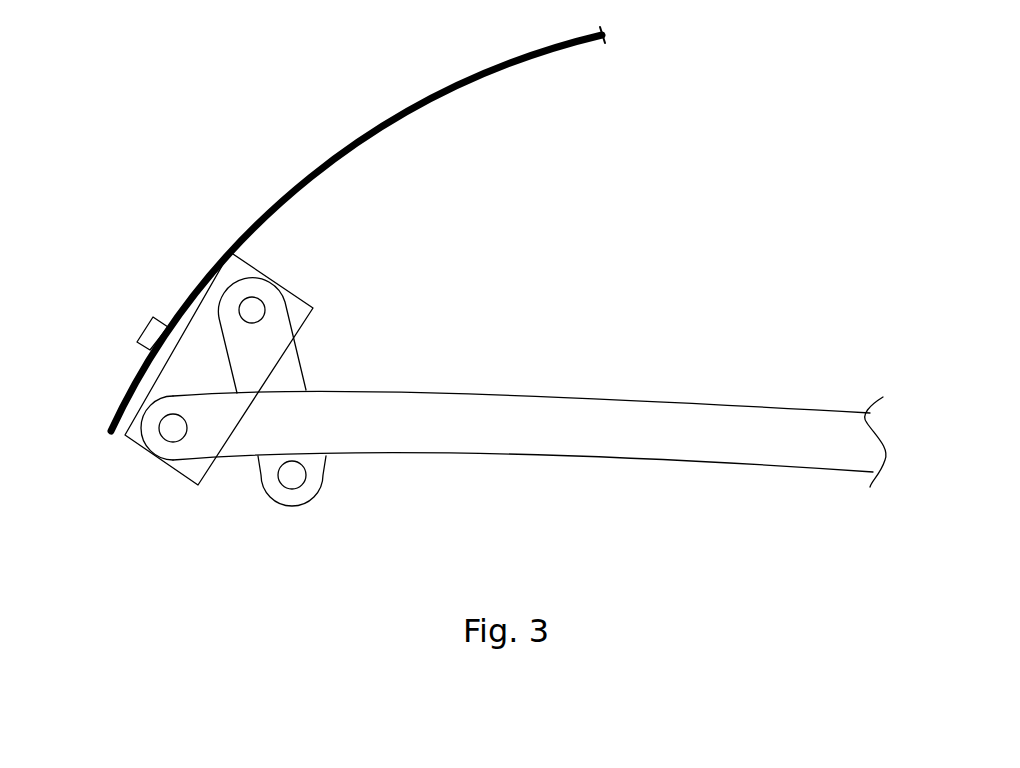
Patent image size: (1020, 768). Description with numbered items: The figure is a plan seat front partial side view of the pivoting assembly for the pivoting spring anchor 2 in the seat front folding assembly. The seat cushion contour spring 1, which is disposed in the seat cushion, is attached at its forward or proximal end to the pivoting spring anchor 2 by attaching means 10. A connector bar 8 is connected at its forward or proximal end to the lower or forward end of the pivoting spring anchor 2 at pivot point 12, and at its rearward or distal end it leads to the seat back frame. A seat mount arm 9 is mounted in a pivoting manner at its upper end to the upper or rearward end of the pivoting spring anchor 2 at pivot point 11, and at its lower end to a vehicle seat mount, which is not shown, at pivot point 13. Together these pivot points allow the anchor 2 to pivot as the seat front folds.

The seat cushion contour spring 1 is at (297, 187).
The pivoting spring anchor 2 is at (128, 445).
The connector bar 8 is at (663, 425).
The seat mount arm 9 is at (280, 378).
The attaching means 10 is at (155, 315).
The pivot point 11 is at (252, 310).
The pivot point 12 is at (173, 428).
The pivot point 13 is at (292, 475).